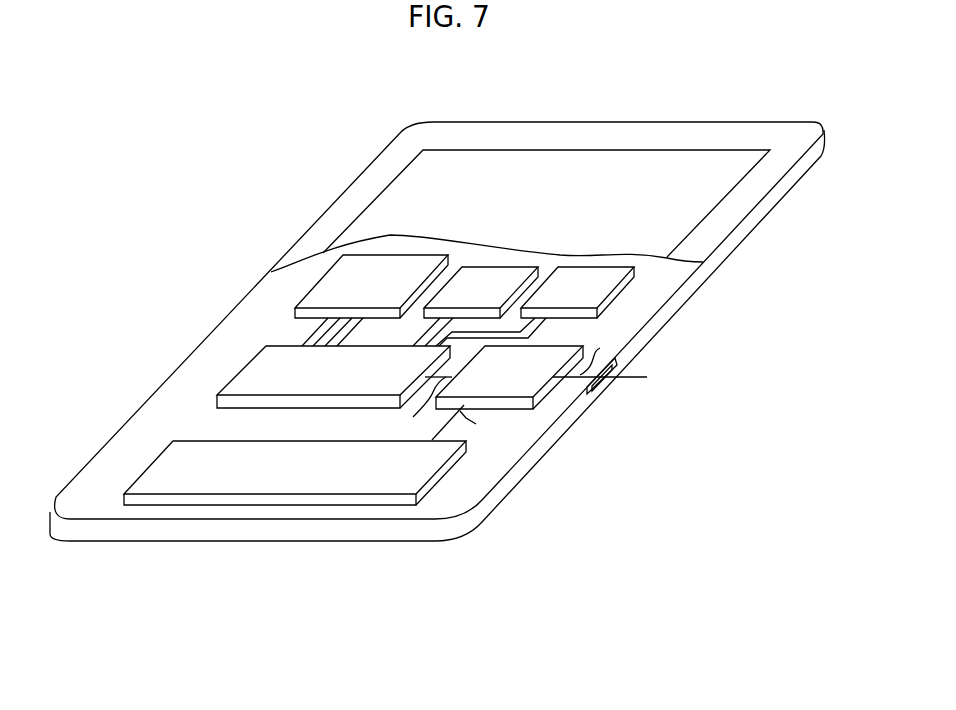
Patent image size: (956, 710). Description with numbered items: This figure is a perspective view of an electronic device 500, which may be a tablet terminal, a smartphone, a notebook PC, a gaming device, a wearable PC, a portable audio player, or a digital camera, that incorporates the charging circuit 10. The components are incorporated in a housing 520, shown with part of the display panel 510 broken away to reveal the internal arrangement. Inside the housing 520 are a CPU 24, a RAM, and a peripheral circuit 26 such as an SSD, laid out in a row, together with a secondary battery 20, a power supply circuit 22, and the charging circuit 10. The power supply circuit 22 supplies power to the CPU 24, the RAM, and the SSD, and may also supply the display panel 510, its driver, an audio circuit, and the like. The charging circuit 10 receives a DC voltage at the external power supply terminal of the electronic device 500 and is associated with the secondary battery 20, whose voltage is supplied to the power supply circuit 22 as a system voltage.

The electronic device 500 is at (467, 614).
The housing 520 is at (790, 133).
The display panel 510 is at (417, 190).
The CPU 24 is at (328, 297).
The peripheral circuit 26 is at (520, 273).
The power supply circuit 22 is at (258, 370).
The charging circuit 10 is at (524, 383).
The secondary battery 20 is at (414, 470).